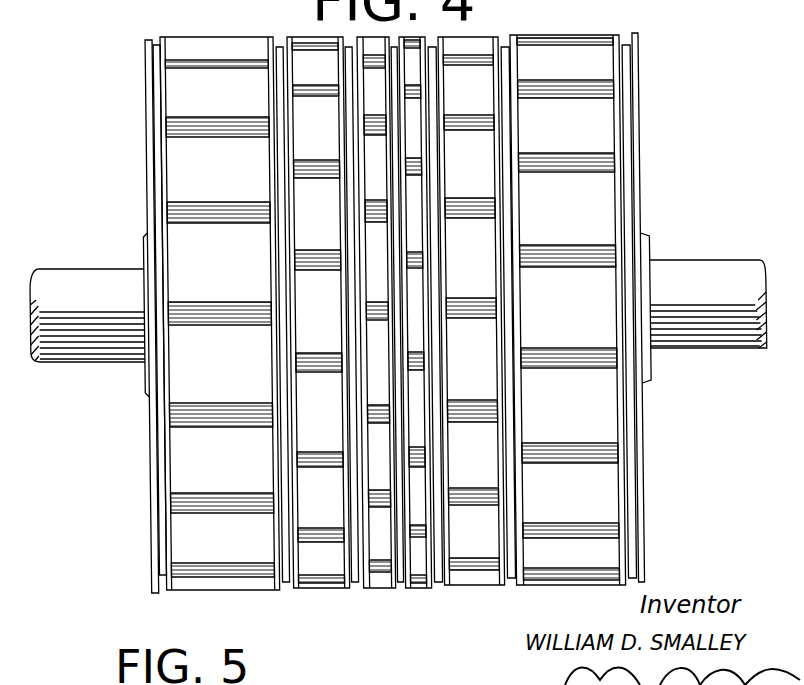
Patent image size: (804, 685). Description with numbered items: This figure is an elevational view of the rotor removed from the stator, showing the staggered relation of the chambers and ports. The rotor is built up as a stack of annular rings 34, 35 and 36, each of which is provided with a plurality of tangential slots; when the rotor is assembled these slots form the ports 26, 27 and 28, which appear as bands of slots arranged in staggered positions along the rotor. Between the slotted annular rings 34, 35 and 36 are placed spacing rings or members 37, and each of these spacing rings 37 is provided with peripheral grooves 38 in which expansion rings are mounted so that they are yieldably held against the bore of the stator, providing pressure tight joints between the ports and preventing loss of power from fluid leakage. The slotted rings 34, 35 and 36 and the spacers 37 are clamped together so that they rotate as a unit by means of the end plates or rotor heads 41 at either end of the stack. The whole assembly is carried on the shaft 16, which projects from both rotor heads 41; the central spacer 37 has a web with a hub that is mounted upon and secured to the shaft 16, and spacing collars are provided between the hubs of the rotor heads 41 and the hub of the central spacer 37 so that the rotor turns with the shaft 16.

The shaft 16 is at (713, 277).
The ports 26 is at (366, 210).
The ports 27 is at (315, 58).
The ports 28 is at (220, 80).
The annular ring 34 is at (206, 50).
The annular ring 35 is at (348, 342).
The annular ring 36 is at (420, 587).
The spacing ring 37 is at (274, 372).
The peripheral groove 38 is at (152, 43).
The rotor head 41 is at (145, 97).